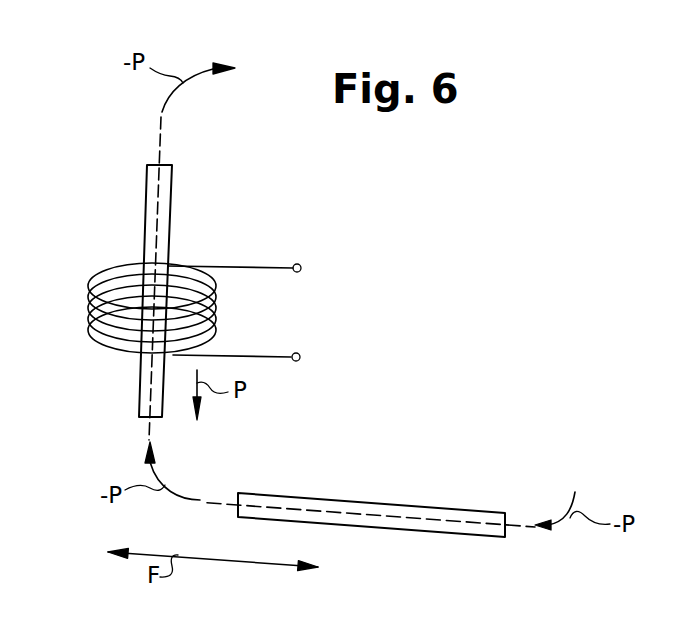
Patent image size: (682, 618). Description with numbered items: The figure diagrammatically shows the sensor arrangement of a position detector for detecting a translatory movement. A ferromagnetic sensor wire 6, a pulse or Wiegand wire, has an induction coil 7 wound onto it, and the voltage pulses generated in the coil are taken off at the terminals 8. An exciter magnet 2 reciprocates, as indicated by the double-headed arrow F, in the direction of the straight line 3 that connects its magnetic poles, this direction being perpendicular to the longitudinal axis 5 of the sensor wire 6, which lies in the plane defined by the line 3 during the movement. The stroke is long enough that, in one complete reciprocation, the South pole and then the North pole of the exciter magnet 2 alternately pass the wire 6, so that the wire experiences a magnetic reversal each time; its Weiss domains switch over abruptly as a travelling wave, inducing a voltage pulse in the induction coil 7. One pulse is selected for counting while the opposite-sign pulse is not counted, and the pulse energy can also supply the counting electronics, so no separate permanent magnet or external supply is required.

The exciter magnet 2 is at (335, 497).
The straight line connecting the magnetic poles 3 is at (518, 527).
The longitudinal axis of the sensor wire 5 is at (162, 127).
The sensor wire 6 is at (172, 205).
The induction coil 7 is at (88, 290).
The terminals 8 is at (300, 266).